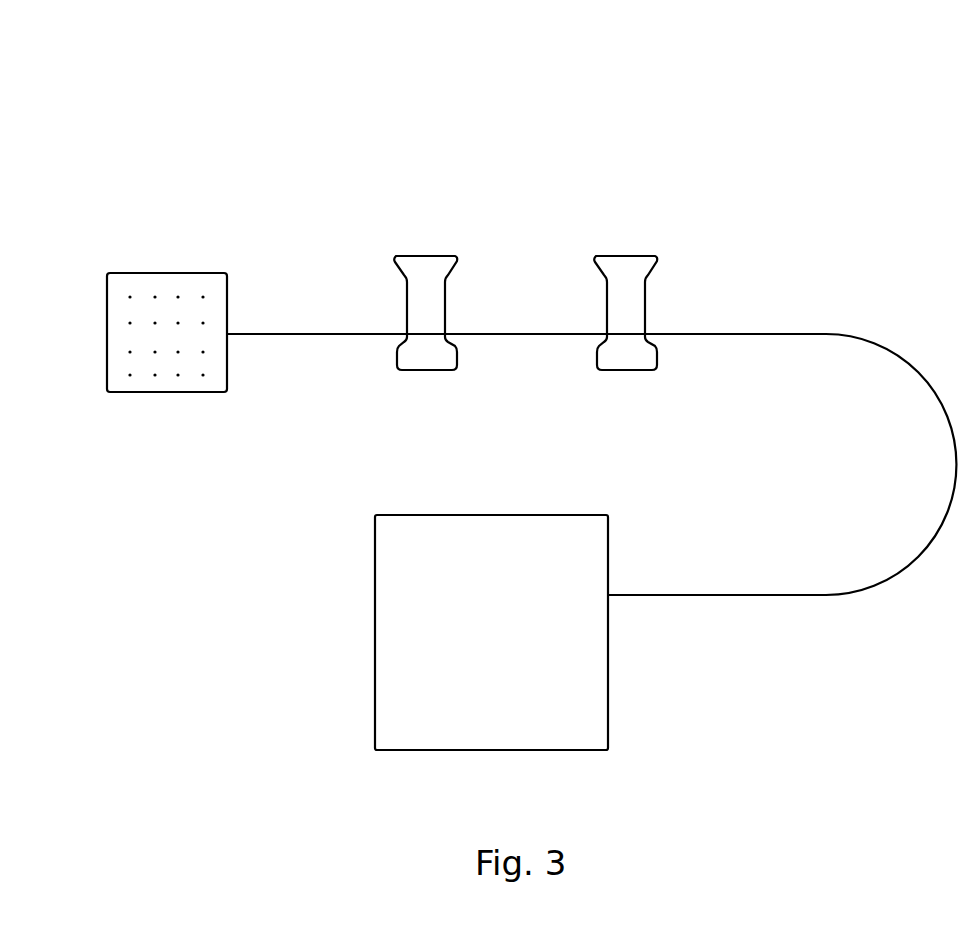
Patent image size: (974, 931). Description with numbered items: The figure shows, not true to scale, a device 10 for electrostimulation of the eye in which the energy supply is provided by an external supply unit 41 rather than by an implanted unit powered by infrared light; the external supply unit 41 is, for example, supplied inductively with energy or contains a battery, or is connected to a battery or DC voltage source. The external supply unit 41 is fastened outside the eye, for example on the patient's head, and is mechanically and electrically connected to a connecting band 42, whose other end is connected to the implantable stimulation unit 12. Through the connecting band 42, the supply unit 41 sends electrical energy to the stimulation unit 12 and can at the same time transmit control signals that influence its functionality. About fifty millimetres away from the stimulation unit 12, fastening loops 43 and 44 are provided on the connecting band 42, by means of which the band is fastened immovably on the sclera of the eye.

The device 10 is at (850, 152).
The stimulation unit 12 is at (167, 281).
The external supply unit 41 is at (587, 697).
The connecting band 42 is at (793, 328).
The fastening loop 43 is at (429, 258).
The fastening loop 44 is at (631, 258).